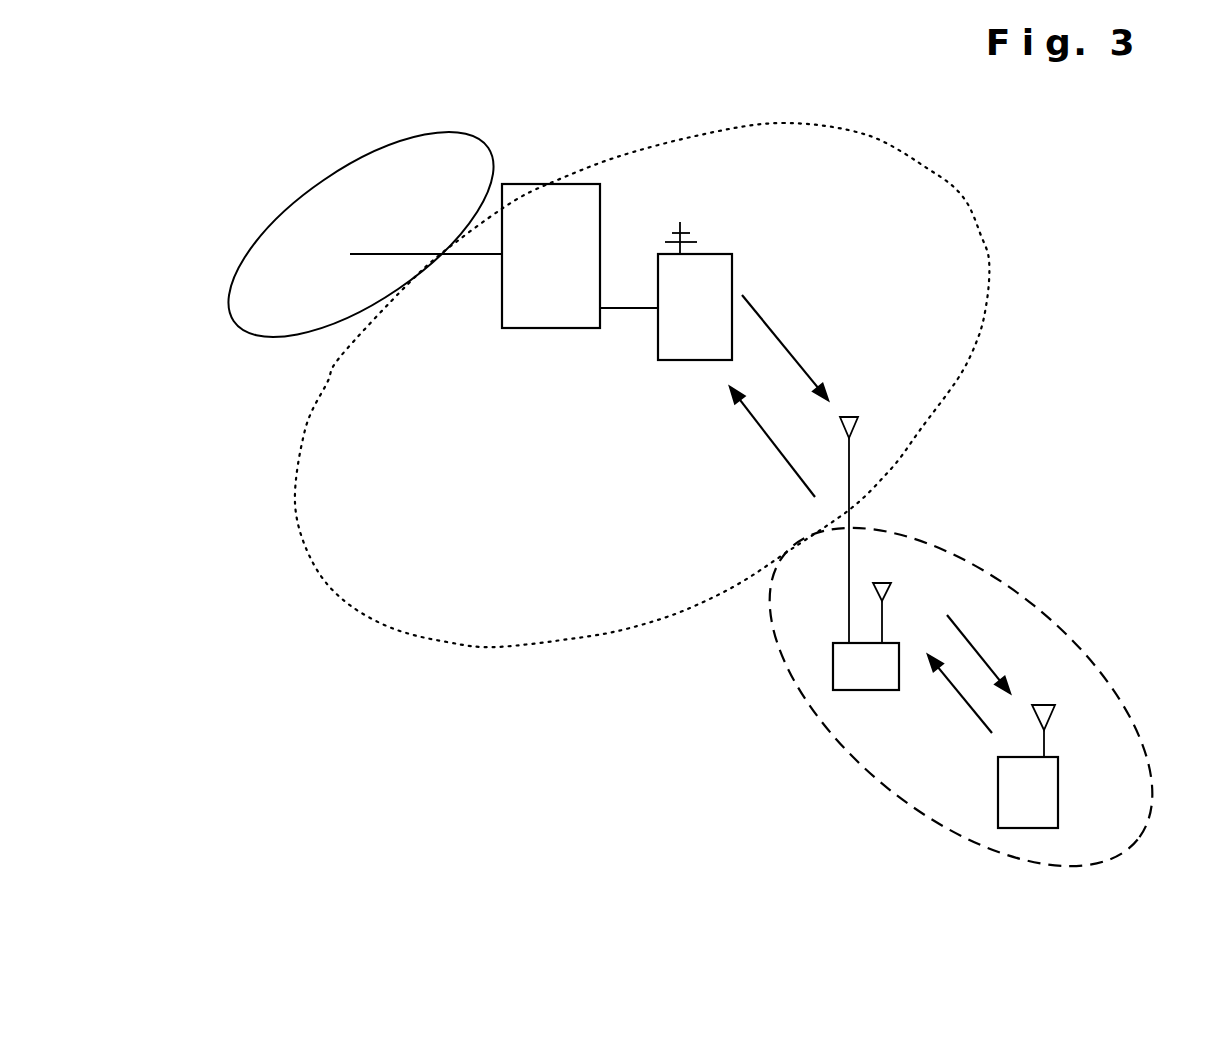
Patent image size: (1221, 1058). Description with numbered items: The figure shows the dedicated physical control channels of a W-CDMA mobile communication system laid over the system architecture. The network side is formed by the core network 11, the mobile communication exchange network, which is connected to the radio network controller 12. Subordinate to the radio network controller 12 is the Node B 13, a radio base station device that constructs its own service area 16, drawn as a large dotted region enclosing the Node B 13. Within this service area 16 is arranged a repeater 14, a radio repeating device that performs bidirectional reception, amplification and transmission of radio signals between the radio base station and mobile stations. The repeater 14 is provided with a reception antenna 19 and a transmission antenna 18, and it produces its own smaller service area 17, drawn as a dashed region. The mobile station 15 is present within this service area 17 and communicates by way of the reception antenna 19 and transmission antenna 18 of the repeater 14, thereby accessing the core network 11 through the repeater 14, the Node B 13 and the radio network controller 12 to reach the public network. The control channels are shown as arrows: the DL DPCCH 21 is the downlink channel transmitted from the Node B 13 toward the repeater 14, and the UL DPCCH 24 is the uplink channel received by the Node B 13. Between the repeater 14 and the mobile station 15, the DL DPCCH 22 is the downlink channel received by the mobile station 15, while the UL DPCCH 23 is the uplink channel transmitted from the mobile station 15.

The core network 11 is at (356, 163).
The radio network controller 12 is at (533, 184).
The Node B 13 is at (732, 254).
The repeater 14 is at (833, 665).
The mobile station 15 is at (1032, 828).
The service area 16 is at (963, 197).
The service area 17 is at (1120, 707).
The transmission antenna 18 is at (882, 617).
The reception antenna 19 is at (849, 473).
The DL DPCCH 21 is at (783, 340).
The DL DPCCH 22 is at (987, 658).
The UL DPCCH 23 is at (962, 697).
The UL DPCCH 24 is at (765, 438).